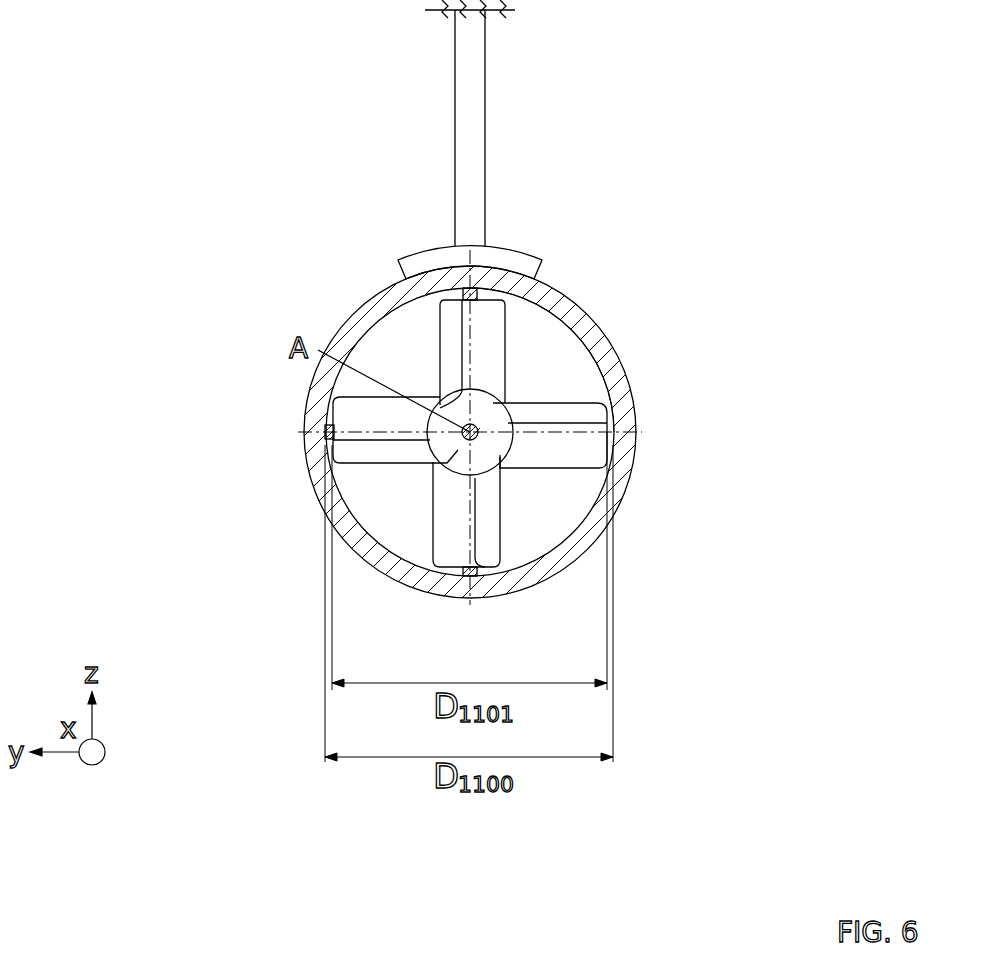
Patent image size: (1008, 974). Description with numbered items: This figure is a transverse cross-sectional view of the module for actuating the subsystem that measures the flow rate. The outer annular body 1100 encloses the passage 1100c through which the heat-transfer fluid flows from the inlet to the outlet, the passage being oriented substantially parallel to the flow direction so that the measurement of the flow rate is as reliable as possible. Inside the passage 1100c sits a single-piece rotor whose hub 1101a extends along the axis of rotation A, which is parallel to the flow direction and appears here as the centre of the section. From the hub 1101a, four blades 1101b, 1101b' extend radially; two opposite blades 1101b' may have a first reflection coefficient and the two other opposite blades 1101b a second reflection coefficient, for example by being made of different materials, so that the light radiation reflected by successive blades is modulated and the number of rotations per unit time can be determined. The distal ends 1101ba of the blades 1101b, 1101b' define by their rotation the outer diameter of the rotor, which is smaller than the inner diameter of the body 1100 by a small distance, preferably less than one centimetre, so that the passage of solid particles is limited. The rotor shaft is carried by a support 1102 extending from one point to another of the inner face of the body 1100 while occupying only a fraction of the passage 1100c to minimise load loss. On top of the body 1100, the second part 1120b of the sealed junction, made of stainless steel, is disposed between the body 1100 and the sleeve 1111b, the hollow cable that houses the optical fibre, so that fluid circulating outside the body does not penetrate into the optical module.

The body 1100 is at (627, 455).
The passage 1100c is at (580, 388).
The hub 1101a is at (495, 447).
The blades 1101b is at (611, 482).
The blades 1101b' is at (565, 508).
The distal end of the blades 1101ba is at (470, 293).
The support 1102 is at (462, 580).
The sleeve 1111b is at (484, 108).
The second part of the sealed junction 1120b is at (518, 262).